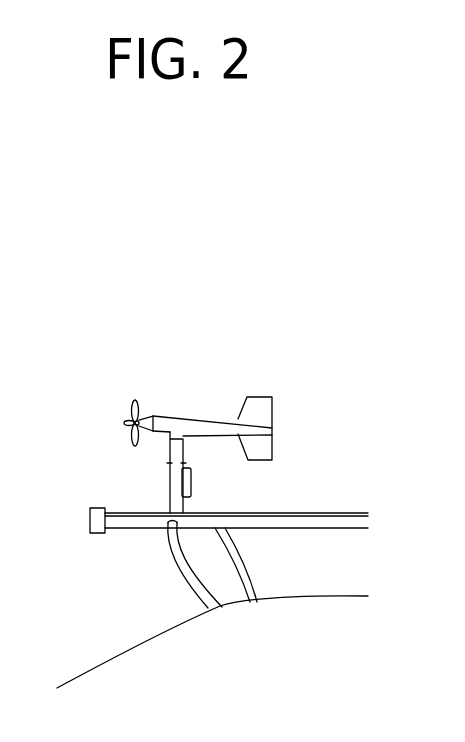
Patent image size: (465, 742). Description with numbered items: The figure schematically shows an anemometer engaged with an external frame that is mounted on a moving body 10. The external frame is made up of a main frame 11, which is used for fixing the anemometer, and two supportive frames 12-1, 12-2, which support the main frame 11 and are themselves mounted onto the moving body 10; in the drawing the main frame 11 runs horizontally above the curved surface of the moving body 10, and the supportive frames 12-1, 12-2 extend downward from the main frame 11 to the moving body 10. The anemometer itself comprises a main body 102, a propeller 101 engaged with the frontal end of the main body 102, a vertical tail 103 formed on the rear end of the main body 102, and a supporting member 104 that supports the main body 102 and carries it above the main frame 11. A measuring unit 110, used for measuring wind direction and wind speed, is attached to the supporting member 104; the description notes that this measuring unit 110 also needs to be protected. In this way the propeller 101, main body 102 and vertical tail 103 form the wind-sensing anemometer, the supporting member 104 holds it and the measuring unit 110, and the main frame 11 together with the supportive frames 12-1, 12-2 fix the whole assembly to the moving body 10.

The moving body 10 is at (98, 662).
The main frame 11 is at (333, 520).
The supportive frame 12-1 is at (243, 557).
The supportive frame 12-2 is at (185, 576).
The propeller 101 is at (136, 400).
The main body 102 is at (195, 418).
The vertical tail 103 is at (258, 405).
The supporting member 104 is at (170, 455).
The measuring unit 110 is at (192, 480).